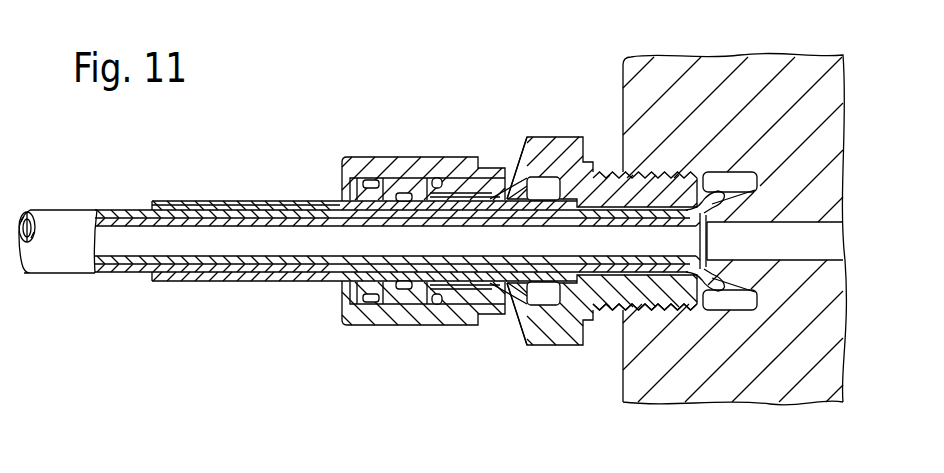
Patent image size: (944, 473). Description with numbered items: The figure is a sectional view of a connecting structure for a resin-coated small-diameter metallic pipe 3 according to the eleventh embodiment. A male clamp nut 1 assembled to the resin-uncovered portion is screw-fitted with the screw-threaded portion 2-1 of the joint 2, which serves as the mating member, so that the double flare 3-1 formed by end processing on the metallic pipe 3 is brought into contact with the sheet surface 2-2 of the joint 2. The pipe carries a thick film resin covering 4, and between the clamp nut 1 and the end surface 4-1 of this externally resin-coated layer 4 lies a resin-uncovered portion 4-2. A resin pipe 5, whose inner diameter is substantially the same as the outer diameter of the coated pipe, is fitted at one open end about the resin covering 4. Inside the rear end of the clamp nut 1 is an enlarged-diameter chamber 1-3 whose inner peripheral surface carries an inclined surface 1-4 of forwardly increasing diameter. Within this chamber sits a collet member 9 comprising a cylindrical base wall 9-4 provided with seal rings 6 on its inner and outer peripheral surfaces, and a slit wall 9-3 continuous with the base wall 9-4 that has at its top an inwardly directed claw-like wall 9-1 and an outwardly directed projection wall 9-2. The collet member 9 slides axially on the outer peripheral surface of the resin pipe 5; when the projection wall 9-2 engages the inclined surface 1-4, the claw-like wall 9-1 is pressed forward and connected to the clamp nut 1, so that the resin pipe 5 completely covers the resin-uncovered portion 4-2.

The clamp nut 1 is at (560, 137).
The enlarged-diameter chamber 1-3 is at (437, 180).
The inclined surface 1-4 is at (503, 168).
The joint 2 is at (820, 137).
The screw-threaded portion 2-1 is at (634, 376).
The sheet surface 2-2 is at (740, 192).
The resin-coated small-diameter metallic pipe 3 is at (60, 222).
The double flare 3-1 is at (722, 290).
The thick film resin covering 4 is at (118, 210).
The end surface of the externally resin-coated layer 4-1 is at (253, 210).
The resin-uncovered portion 4-2 is at (287, 277).
The resin pipe 5 is at (280, 201).
The elastic sealing ring 6 is at (384, 182).
The collet member 9 is at (341, 298).
The claw-like wall 9-1 is at (517, 203).
The projection wall 9-2 is at (530, 291).
The slit wall 9-3 is at (440, 297).
The cylindrical base wall 9-4 is at (395, 301).